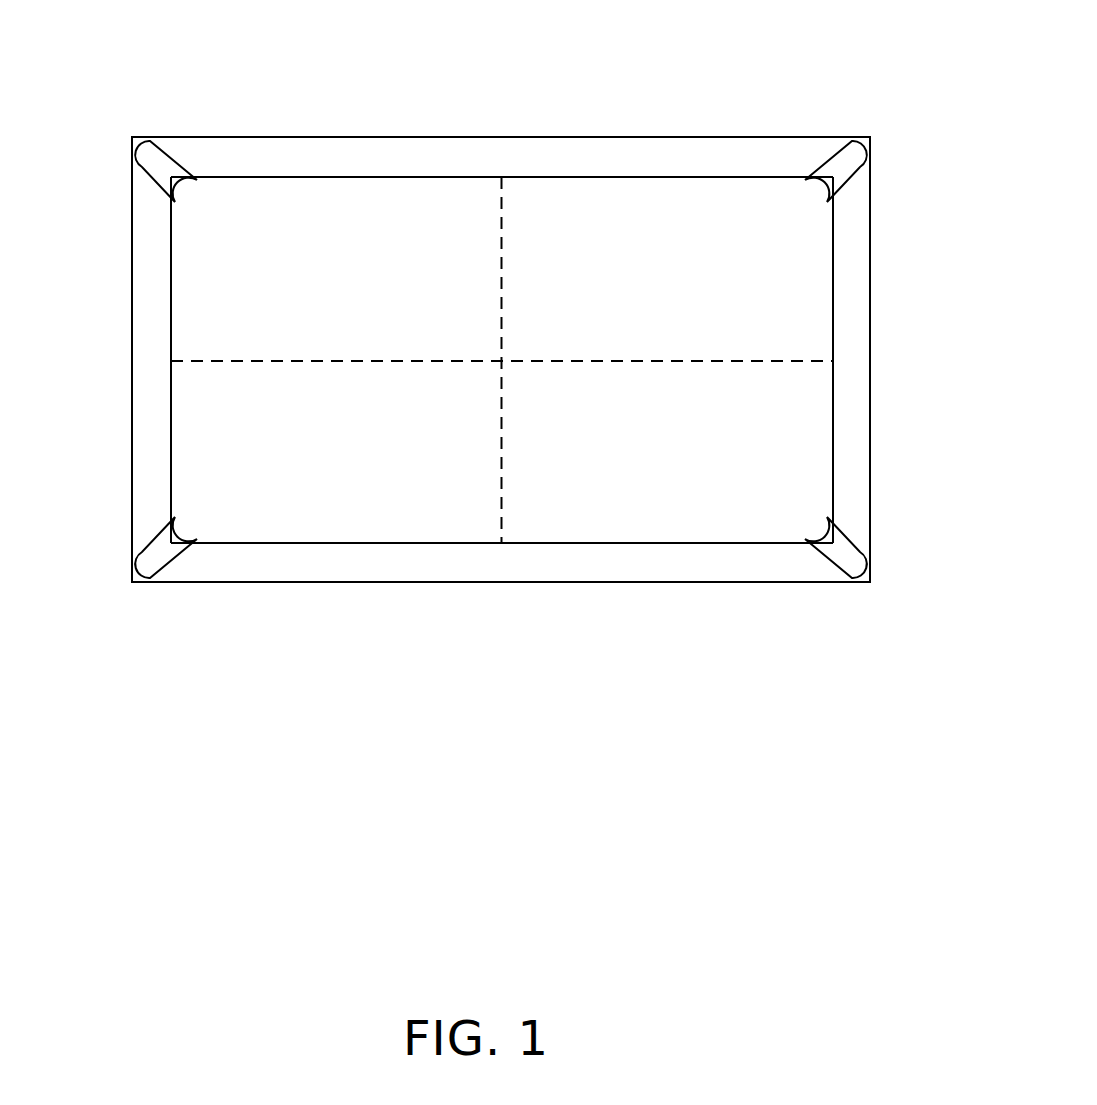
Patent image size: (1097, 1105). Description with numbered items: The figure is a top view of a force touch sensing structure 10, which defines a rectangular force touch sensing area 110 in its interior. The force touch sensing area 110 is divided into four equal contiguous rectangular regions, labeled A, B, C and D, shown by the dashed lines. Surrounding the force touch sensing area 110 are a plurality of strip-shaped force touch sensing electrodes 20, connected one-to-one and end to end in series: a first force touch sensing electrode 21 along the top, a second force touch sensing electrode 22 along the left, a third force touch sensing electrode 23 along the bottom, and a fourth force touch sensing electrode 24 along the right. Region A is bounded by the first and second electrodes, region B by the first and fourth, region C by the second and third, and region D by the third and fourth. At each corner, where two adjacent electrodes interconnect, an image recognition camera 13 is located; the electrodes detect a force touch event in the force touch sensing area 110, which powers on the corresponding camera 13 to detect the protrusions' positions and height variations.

The force touch sensing structure 10 is at (492, 53).
The image recognition camera 13 is at (155, 160).
The force touch sensing electrode 20 is at (655, 152).
The first force touch sensing electrode 21 is at (472, 152).
The second force touch sensing electrode 22 is at (150, 357).
The third force touch sensing electrode 23 is at (475, 565).
The fourth force touch sensing electrode 24 is at (862, 358).
The force touch sensing area 110 is at (640, 515).